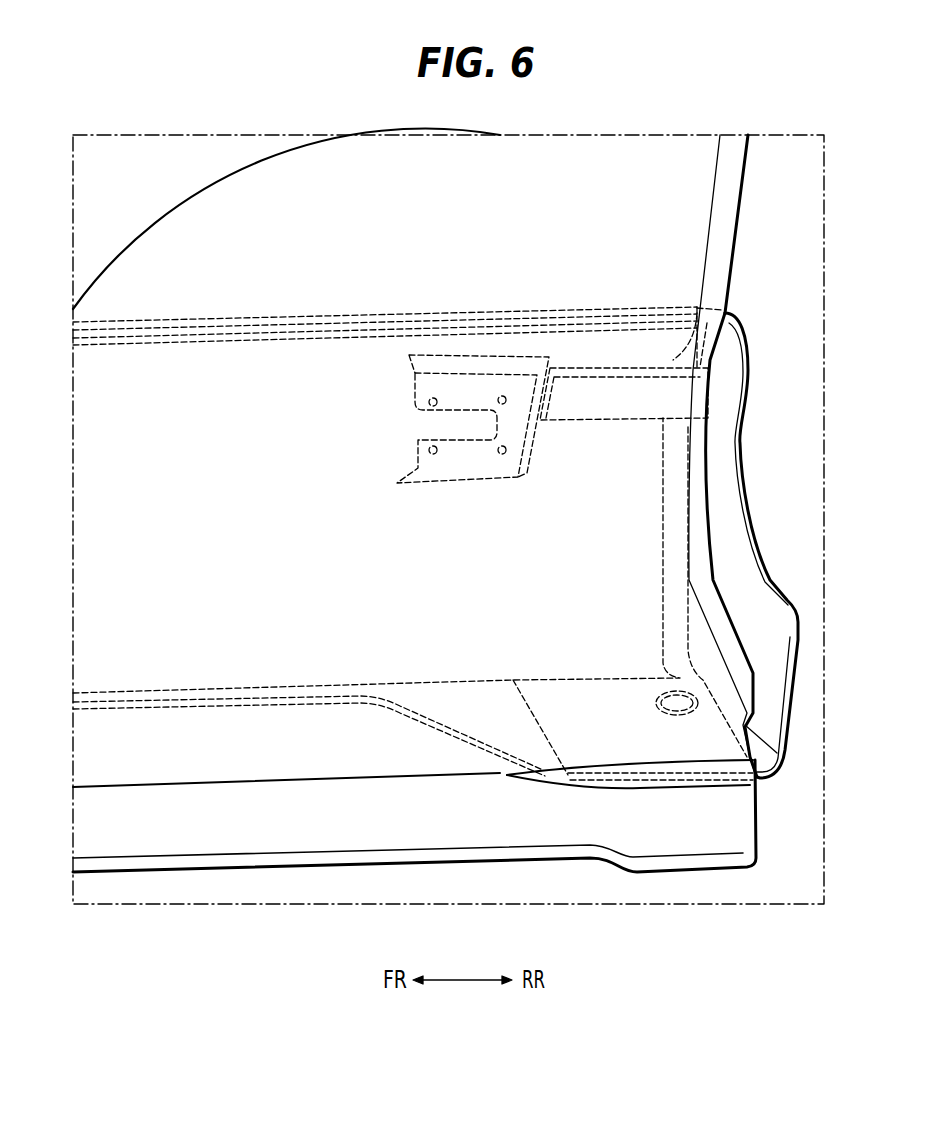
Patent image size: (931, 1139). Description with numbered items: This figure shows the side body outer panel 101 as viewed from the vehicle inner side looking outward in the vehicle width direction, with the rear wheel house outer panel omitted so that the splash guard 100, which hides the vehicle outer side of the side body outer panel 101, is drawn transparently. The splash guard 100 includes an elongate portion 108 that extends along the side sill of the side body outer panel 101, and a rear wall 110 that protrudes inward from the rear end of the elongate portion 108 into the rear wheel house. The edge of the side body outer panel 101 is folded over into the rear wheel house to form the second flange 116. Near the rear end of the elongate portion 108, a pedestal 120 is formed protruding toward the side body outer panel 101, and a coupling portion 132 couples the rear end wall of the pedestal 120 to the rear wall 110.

The splash guard 100 is at (788, 542).
The side body outer panel 101 is at (140, 660).
The elongate portion 108 is at (132, 367).
The rear wall 110 is at (773, 678).
The second flange 116 is at (718, 242).
The pedestal 120 is at (481, 365).
The coupling portion 132 is at (613, 367).